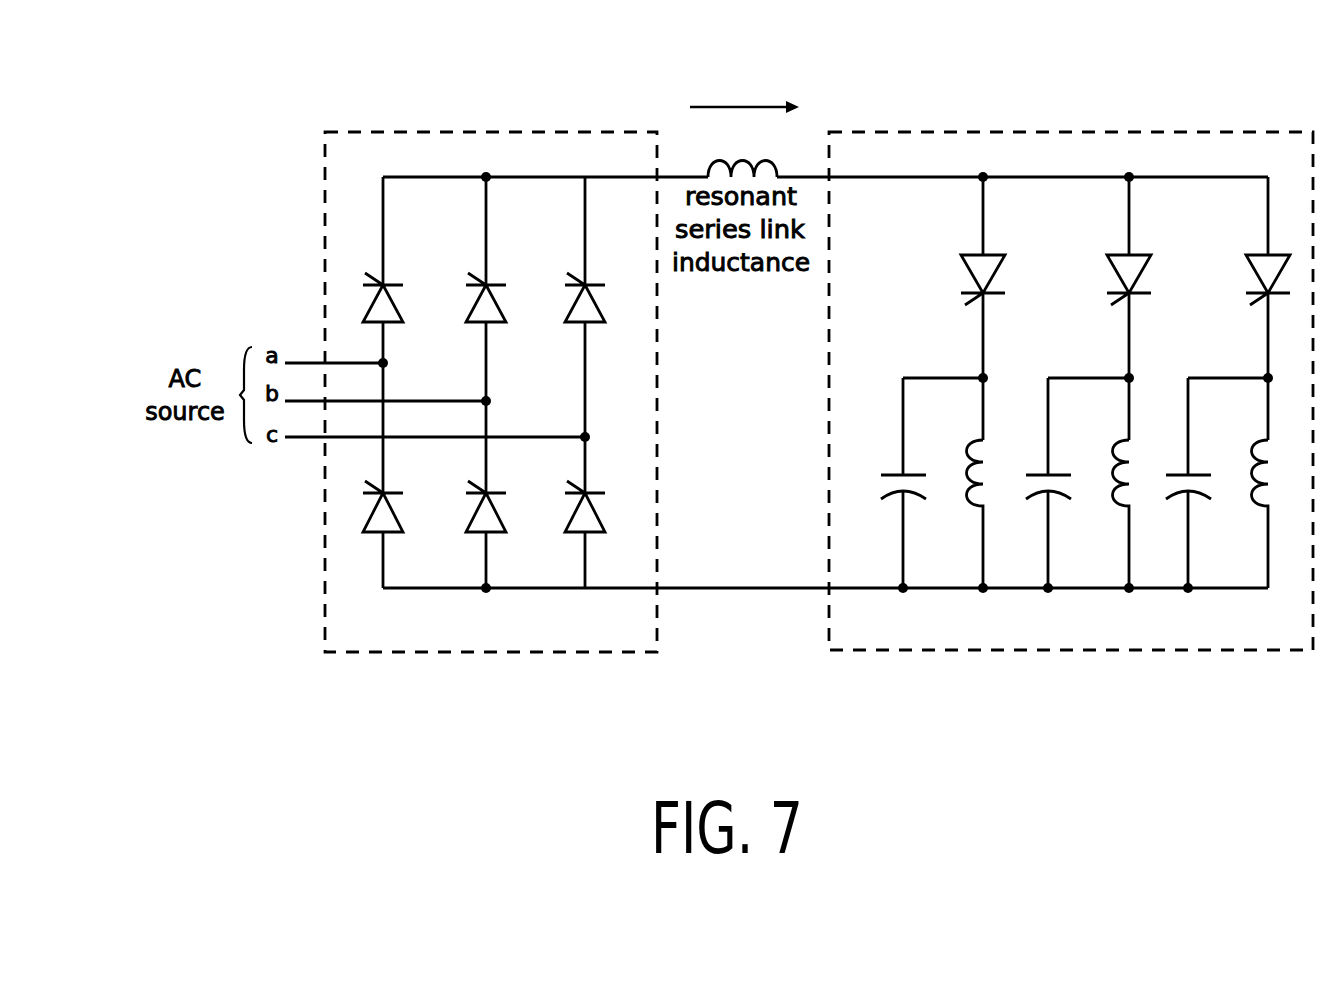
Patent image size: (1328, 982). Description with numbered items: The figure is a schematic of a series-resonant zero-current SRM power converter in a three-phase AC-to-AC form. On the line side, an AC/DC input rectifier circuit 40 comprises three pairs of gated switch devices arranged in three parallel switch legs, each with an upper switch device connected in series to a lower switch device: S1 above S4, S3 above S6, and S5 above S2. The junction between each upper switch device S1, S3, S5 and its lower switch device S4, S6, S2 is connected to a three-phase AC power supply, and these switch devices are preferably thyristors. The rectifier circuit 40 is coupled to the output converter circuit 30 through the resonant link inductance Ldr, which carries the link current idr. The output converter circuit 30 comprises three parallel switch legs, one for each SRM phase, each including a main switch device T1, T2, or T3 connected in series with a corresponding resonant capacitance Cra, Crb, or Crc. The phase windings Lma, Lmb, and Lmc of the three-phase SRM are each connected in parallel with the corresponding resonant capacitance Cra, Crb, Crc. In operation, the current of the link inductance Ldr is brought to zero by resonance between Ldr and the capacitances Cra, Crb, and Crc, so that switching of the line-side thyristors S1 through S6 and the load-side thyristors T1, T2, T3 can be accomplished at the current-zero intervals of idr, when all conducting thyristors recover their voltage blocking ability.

The input rectifier circuit 40 is at (491, 352).
The output converter circuit 30 is at (985, 347).
The switch device S1 is at (397, 287).
The switch device S2 is at (597, 497).
The switch device S3 is at (498, 287).
The switch device S4 is at (396, 497).
The switch device S5 is at (600, 287).
The switch device S6 is at (498, 497).
The main switch device T1 is at (973, 258).
The main switch device T2 is at (1115, 258).
The main switch device T3 is at (1249, 258).
The resonant link inductance Ldr is at (742, 147).
The link current idr is at (744, 85).
The phase winding Lma is at (951, 493).
The phase winding Lmb is at (1096, 493).
The phase winding Lmc is at (1237, 493).
The resonant capacitance Cra is at (888, 458).
The resonant capacitance Crb is at (1033, 458).
The resonant capacitance Crc is at (1176, 458).